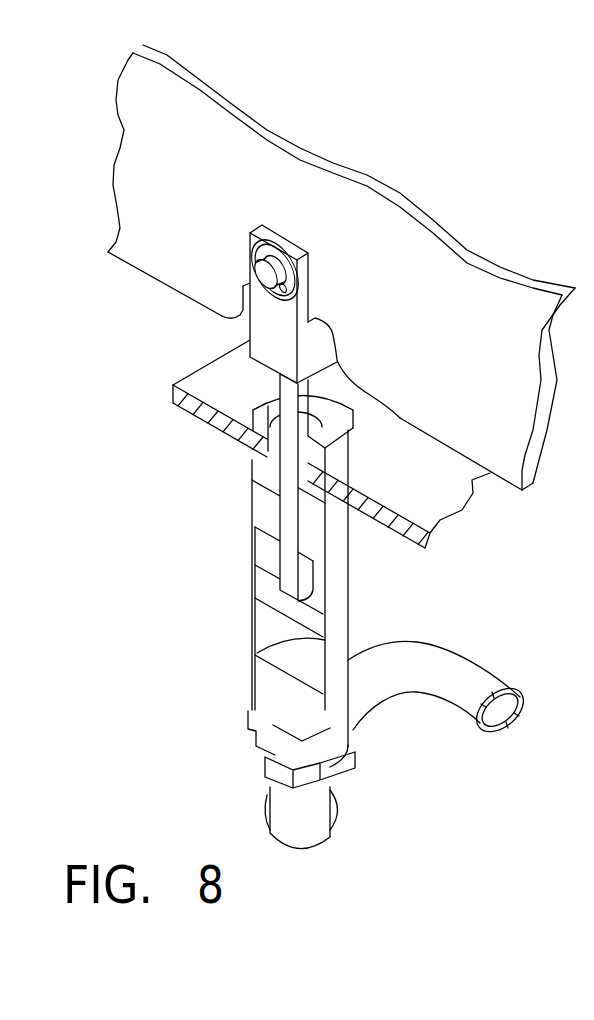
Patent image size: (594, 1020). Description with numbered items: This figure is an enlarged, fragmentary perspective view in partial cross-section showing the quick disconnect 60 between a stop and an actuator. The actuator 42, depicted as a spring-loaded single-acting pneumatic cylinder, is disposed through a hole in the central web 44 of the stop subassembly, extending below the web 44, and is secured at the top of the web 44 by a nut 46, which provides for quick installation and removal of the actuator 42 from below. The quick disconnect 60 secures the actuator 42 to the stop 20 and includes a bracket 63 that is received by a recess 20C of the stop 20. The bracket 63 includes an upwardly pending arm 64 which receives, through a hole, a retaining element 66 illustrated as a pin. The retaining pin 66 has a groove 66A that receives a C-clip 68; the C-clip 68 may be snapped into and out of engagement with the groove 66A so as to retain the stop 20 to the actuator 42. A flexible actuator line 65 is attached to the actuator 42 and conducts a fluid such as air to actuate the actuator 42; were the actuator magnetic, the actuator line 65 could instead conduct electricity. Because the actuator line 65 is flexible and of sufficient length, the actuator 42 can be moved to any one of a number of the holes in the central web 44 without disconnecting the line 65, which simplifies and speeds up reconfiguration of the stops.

The stop 20 is at (470, 288).
The recess 20C is at (340, 350).
The actuator 42 is at (340, 628).
The central web 44 is at (439, 493).
The nut 46 is at (355, 444).
The quick disconnect 60 is at (216, 344).
The bracket 63 is at (293, 347).
The upwardly pending arm 64 is at (306, 263).
The flexible actuator line 65 is at (457, 665).
The retaining element 66 is at (256, 270).
The groove 66A is at (300, 283).
The C-clip 68 is at (257, 245).